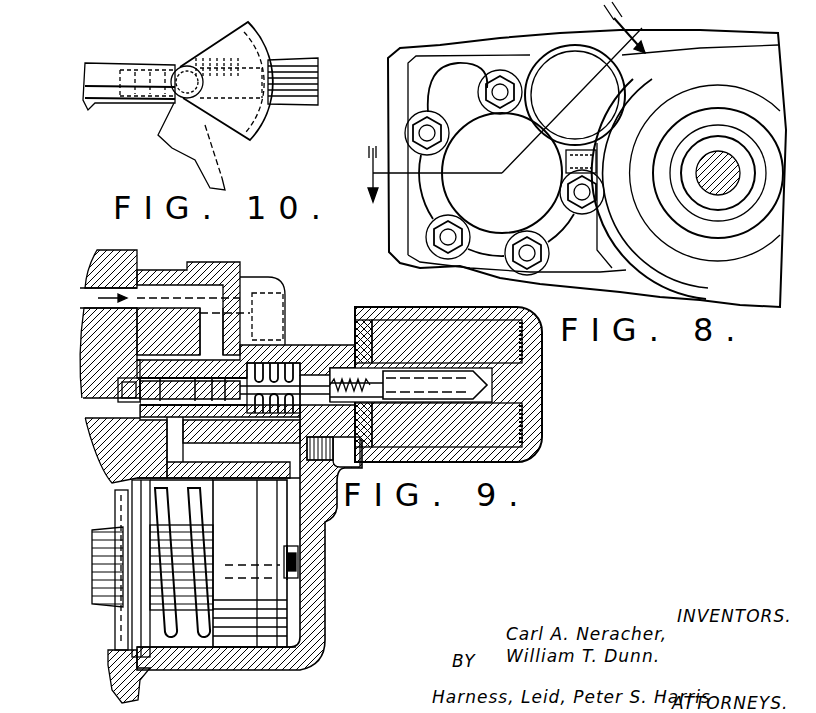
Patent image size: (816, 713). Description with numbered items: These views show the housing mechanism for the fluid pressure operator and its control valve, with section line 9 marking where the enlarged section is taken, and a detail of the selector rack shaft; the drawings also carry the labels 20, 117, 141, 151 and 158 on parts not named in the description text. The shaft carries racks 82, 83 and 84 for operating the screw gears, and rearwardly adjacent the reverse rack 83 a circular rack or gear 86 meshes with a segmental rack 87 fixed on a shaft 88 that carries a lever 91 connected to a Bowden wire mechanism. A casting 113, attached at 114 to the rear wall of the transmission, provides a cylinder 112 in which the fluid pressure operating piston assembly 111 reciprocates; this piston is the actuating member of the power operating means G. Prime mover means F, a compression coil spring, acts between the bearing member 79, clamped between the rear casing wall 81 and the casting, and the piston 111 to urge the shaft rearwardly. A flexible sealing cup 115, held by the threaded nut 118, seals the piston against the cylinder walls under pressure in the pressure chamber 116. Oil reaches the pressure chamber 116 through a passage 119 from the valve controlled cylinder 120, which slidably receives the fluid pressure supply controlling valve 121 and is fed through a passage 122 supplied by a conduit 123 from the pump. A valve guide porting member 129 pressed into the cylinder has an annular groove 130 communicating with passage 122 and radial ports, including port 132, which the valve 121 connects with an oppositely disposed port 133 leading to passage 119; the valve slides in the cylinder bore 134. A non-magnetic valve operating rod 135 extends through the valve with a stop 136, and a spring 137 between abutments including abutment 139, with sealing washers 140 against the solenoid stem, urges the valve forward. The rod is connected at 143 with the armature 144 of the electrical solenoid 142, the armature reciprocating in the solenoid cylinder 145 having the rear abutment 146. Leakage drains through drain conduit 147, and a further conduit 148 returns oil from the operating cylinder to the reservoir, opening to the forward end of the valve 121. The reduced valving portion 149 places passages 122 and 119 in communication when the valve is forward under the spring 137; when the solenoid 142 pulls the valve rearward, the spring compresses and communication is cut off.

In FIG. 8, the drive shaft 20 is at (718, 170).
In FIG. 9, the bearing member 79 is at (118, 500).
In FIG. 8, the rear casing wall 81 is at (566, 270).
In FIG. 10, the rack 82 is at (152, 68).
In FIG. 10, the reverse rack 83 is at (215, 56).
In FIG. 10, the rack 84 is at (95, 108).
In FIG. 10, the circular rack or gear 86 is at (298, 64).
In FIG. 9, the circular rack or gear 86 is at (95, 560).
In FIG. 10, the segmental rack 87 is at (255, 30).
In FIG. 10, the shaft 88 is at (170, 108).
In FIG. 10, the lever 91 is at (228, 172).
In FIG. 8, the section line 9— 9 is at (514, 119).
In FIG. 9, the fluid pressure operating piston assembly 111 is at (262, 612).
In FIG. 9, the cylinder 112 is at (196, 670).
In FIG. 8, the casting 113 is at (548, 215).
In FIG. 8, the attachment 114 is at (428, 128).
In FIG. 9, the flexible sealing cup 115 is at (300, 650).
In FIG. 9, the pressure chamber 116 is at (290, 628).
In FIG. 9, the bolt 117 is at (302, 560).
In FIG. 9, the fastener or nut 118 is at (300, 576).
In FIG. 9, the passage 119 is at (332, 516).
In FIG. 9, the valve controlled chamber or cylinder 120 is at (110, 437).
In FIG. 9, the fluid pressure supply controlling valve 121 is at (130, 386).
In FIG. 9, the passage 122 is at (220, 292).
In FIG. 9, the conduit 123 is at (100, 283).
In FIG. 9, the valve guide porting member 129 is at (150, 370).
In FIG. 9, the annular groove 130 is at (170, 304).
In FIG. 9, the port 132 is at (175, 350).
In FIG. 9, the port 133 is at (176, 476).
In FIG. 9, the cylinder bore 134 is at (188, 441).
In FIG. 9, the valve operating rod 135 is at (276, 360).
In FIG. 9, the stop 136 is at (125, 398).
In FIG. 9, the spring 137 is at (270, 442).
In FIG. 9, the abutment 139 is at (310, 362).
In FIG. 9, the sealing washers 140 is at (383, 383).
In FIG. 9, the lower cylinder block 141 is at (447, 425).
In FIG. 9, the electrical solenoid 142 is at (436, 462).
In FIG. 9, the connection 143 is at (388, 380).
In FIG. 9, the armature 144 is at (447, 341).
In FIG. 9, the solenoid cylinder 145 is at (499, 383).
In FIG. 9, the rear abutment 146 is at (541, 374).
In FIG. 8, the drain conduit 147 is at (552, 172).
In FIG. 9, the drain conduit 147 is at (258, 348).
In FIG. 9, the conduit 148 is at (122, 420).
In FIG. 9, the reduced valving portion 149 is at (205, 330).
In FIG. 9, the spring seat 151 is at (268, 357).
In FIG. 9, the block 158 is at (240, 438).
In FIG. 9, the prime mover means F is at (205, 512).
In FIG. 9, the power operating means G is at (292, 594).